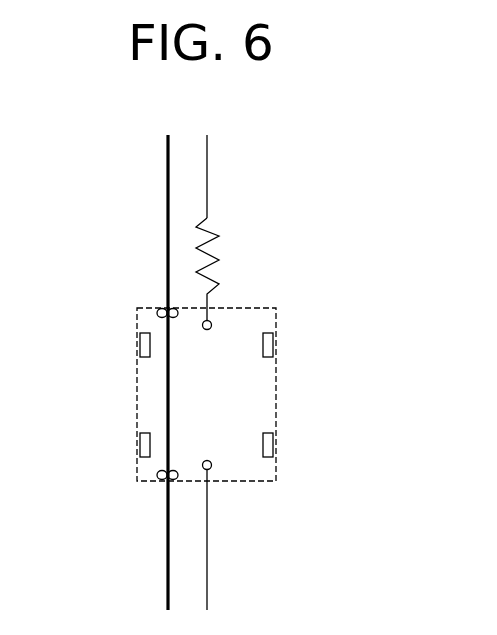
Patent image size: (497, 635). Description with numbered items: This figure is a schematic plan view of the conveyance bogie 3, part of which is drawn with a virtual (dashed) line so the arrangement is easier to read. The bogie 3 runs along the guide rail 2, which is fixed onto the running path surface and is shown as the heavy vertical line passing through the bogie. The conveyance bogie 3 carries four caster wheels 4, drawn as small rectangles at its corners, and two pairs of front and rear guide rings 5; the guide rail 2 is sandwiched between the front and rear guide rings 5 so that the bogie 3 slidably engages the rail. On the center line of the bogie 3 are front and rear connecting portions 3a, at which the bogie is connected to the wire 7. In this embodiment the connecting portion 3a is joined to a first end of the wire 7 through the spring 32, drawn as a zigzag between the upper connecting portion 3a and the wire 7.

The guide rail 2 is at (168, 258).
The conveyance bogie 3 is at (278, 388).
The connecting portion 3a is at (203, 329).
The caster wheel 4 is at (273, 341).
The guide ring 5 is at (158, 479).
The wire 7 is at (207, 172).
The spring 32 is at (219, 258).